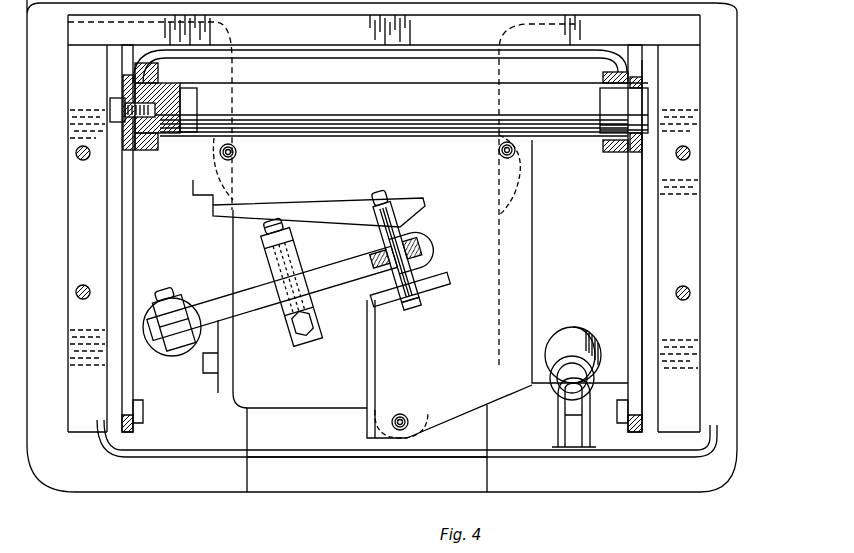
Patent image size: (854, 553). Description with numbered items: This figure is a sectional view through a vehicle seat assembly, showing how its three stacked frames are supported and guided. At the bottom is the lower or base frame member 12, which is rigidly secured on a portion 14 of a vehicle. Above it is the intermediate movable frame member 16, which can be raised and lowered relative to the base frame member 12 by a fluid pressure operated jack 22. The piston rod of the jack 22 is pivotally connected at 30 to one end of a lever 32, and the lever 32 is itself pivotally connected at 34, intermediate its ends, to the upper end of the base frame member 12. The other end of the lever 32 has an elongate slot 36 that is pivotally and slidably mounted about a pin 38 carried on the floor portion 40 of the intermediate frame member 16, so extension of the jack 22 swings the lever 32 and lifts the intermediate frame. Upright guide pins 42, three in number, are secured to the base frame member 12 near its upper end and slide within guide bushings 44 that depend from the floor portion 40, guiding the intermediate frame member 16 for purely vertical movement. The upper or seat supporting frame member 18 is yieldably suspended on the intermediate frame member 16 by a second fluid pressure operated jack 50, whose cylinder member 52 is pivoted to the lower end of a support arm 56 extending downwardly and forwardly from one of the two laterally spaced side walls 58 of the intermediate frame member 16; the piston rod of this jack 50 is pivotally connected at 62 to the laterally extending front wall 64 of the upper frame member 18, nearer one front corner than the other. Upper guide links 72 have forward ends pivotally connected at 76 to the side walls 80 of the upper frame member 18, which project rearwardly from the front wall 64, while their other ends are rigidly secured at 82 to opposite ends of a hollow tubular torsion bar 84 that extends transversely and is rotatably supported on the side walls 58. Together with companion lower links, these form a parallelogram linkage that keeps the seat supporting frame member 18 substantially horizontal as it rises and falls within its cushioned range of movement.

The lower or base frame member 12 is at (238, 396).
The portion of a vehicle 14 is at (160, 486).
The intermediate movable frame member 16 is at (364, 393).
The upper or seat supporting frame member 18 is at (706, 132).
The fluid pressure operated motor means or jack 22 is at (180, 296).
The pivotal connection 30 is at (190, 347).
The lever 32 is at (334, 281).
The pivotal connection 34 is at (312, 342).
The elongate slot 36 is at (412, 210).
The pin 38 is at (428, 256).
The floor portion 40 is at (367, 336).
The upright guide pins 42 is at (243, 170).
The guide bushings 44 is at (237, 152).
The fluid pressure operated motor means or jack 50 is at (584, 332).
The cylinder member 52 is at (556, 333).
The support arm 56 is at (623, 252).
The side walls 58 is at (140, 72).
The pivotal connection 62 is at (548, 400).
The front wall 64 is at (440, 451).
The upper guide links 72 is at (128, 168).
The pivotal connection 76 is at (110, 448).
The side walls 80 is at (100, 438).
The rigid connection 82 is at (150, 105).
The hollow tubular torsion bar 84 is at (370, 124).